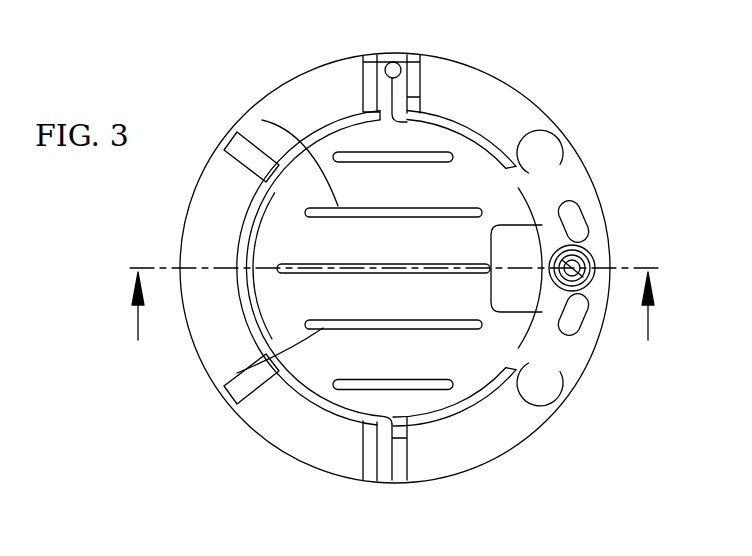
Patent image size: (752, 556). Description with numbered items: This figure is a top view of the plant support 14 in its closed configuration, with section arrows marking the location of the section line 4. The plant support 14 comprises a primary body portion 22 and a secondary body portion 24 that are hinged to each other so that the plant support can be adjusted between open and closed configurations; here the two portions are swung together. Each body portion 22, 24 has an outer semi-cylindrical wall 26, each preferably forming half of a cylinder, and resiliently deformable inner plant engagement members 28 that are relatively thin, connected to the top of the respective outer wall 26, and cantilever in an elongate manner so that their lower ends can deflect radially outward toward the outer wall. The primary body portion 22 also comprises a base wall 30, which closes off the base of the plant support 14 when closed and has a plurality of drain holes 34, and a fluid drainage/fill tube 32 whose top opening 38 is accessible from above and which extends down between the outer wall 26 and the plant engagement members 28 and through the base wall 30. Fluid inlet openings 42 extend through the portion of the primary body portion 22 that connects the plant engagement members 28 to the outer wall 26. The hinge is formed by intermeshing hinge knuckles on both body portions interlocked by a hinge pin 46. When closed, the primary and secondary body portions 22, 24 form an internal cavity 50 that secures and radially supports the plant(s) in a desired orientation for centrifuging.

The plant support 14 is at (640, 78).
The primary body portion 22 is at (510, 94).
The secondary body portion 24 is at (282, 97).
The outer semi-cylindrical wall 26 is at (243, 427).
The plant engagement members 28 is at (335, 122).
The base wall 30 is at (268, 242).
The fluid drainage/fill tube 32 is at (517, 251).
The drain holes 34 is at (262, 120).
The top opening 38 is at (583, 262).
The fluid inlet openings 42 is at (545, 157).
The hinge pin 46 is at (396, 62).
The internal cavity 50 is at (424, 283).
The section line 4- 4 is at (399, 304).